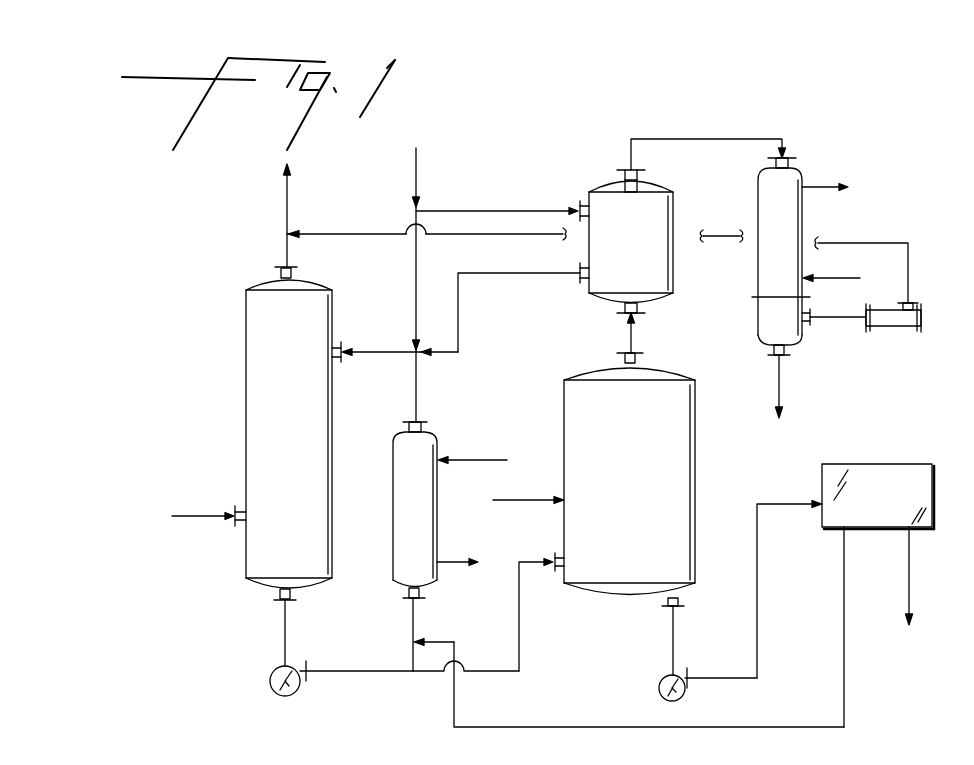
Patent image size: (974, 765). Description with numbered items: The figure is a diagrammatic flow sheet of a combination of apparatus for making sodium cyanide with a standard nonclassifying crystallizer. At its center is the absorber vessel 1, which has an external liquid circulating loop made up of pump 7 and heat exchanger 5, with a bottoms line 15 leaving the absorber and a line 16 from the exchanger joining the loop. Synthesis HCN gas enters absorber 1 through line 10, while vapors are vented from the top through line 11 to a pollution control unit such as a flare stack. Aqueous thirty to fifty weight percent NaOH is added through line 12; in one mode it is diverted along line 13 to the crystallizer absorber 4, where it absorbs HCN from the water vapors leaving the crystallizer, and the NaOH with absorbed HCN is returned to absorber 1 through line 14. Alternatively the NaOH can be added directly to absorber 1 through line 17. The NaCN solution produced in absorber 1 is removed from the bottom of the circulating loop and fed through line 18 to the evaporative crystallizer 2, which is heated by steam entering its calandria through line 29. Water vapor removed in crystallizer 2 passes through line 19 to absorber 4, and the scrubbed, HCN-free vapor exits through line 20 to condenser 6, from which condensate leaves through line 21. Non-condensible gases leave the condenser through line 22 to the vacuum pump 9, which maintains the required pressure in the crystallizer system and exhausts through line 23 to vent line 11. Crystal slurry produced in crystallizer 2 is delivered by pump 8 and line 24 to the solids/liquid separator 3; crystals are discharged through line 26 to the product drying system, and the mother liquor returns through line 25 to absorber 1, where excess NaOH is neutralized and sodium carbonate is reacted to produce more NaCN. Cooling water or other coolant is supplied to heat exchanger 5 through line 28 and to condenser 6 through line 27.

The absorber vessel 1 is at (296, 426).
The evaporative crystallizer 2 is at (640, 471).
The solids/liquid separator 3 is at (866, 506).
The crystallizer absorber 4 is at (619, 249).
The heat exchanger 5 is at (404, 513).
The condenser 6 is at (800, 256).
The pump 7 is at (270, 680).
The pump 8 is at (659, 693).
The vacuum pump 9 is at (893, 330).
The line 10 is at (204, 516).
The line 11 is at (286, 212).
The line 12 is at (415, 178).
The gas line to separator 13 is at (523, 208).
The line 14 is at (516, 270).
The bottoms line from first vessel 15 is at (287, 645).
The bottoms line from absorber 16 is at (411, 626).
The line 17 is at (402, 353).
The line 18 is at (521, 642).
The line 19 is at (636, 342).
The line 20 is at (683, 138).
The line 21 is at (775, 382).
The line to heat exchanger 22 is at (850, 320).
The line 23 is at (909, 292).
The line 24 is at (758, 606).
The line 25 is at (843, 676).
The line 26 is at (909, 595).
The line 27 is at (846, 276).
The line 28 is at (490, 460).
The line 29 is at (542, 500).